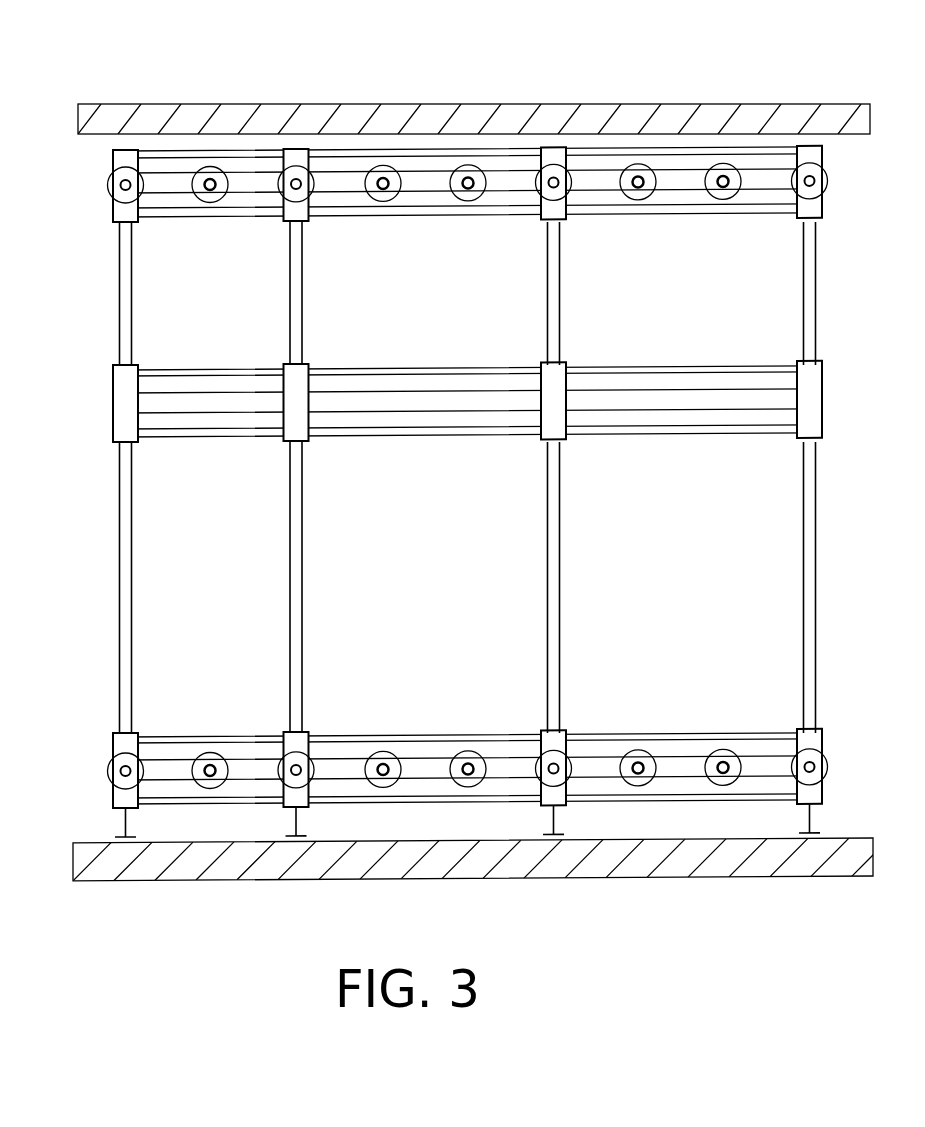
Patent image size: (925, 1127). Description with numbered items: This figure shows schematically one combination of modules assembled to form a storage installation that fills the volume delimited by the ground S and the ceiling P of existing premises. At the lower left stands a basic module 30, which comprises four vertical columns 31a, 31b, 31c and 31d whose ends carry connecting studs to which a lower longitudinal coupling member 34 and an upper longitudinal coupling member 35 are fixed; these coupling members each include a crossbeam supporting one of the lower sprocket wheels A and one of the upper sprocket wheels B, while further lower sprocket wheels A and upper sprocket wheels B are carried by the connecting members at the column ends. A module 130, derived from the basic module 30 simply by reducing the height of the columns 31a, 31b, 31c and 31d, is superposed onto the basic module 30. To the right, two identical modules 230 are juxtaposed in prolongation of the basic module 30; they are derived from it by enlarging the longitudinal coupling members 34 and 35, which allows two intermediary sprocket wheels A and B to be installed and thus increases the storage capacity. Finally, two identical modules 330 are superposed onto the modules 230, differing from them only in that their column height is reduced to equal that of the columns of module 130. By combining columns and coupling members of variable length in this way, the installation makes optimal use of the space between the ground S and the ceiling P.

The ceiling P is at (846, 113).
The ground S is at (851, 853).
The module 130 is at (188, 272).
The basic module 30 is at (185, 632).
The modules 330 is at (510, 300).
The modules 230 is at (502, 528).
The vertical column 31a is at (132, 515).
The vertical column 31b is at (297, 642).
The vertical column 31c is at (303, 525).
The vertical column 31d is at (118, 482).
The lower longitudinal coupling member 34 is at (467, 737).
The upper longitudinal coupling member 35 is at (445, 423).
The lower sprocket wheels A is at (477, 822).
The upper sprocket wheels B is at (478, 243).